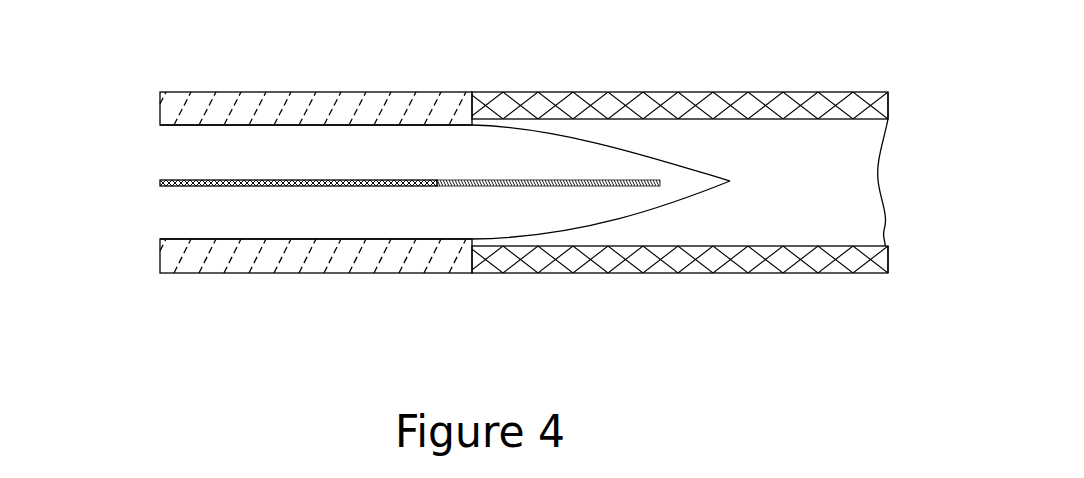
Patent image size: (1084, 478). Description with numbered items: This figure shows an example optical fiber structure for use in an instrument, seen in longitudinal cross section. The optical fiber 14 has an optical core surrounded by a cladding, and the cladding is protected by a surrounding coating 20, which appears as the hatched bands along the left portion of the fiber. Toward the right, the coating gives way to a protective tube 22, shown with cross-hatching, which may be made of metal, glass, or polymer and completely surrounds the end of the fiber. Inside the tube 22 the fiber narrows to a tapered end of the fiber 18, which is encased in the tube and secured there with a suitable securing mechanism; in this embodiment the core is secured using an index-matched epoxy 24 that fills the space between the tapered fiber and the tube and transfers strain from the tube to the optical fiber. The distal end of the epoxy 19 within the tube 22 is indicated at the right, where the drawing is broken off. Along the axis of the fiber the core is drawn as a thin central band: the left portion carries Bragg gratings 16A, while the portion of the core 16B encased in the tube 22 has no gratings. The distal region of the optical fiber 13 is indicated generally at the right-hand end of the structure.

The distal region of the optical fiber 13 is at (916, 124).
The optical fiber 14 is at (161, 143).
The Bragg gratings 16A is at (228, 207).
The portion of the core encased in the tube 16B is at (470, 208).
The tapered end of the fiber 18 is at (690, 160).
The distal end of the epoxy 19 is at (883, 185).
The coating 20 is at (290, 53).
The tube 22 is at (624, 87).
The index-matched epoxy 24 is at (774, 214).